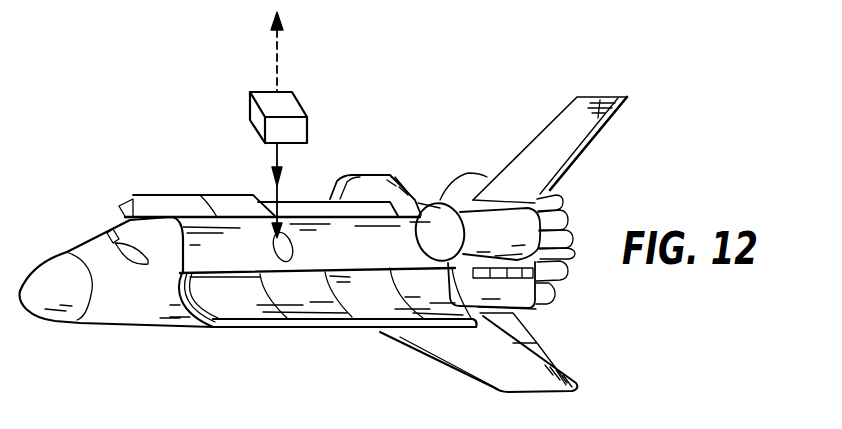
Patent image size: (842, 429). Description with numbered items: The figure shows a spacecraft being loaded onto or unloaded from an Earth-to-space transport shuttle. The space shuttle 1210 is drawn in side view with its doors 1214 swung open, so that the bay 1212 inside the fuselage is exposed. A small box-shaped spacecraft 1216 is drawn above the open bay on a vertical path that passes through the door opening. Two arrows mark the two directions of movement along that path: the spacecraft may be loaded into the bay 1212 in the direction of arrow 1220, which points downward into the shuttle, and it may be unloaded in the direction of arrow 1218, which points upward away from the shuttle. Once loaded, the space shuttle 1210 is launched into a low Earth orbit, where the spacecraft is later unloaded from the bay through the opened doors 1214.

The space shuttle 1210 is at (137, 315).
The bay 1212 is at (340, 247).
The doors 1214 is at (119, 207).
The payload / satellite module 1216 is at (250, 118).
The arrow 1218 is at (278, 52).
The arrow 1220 is at (280, 153).